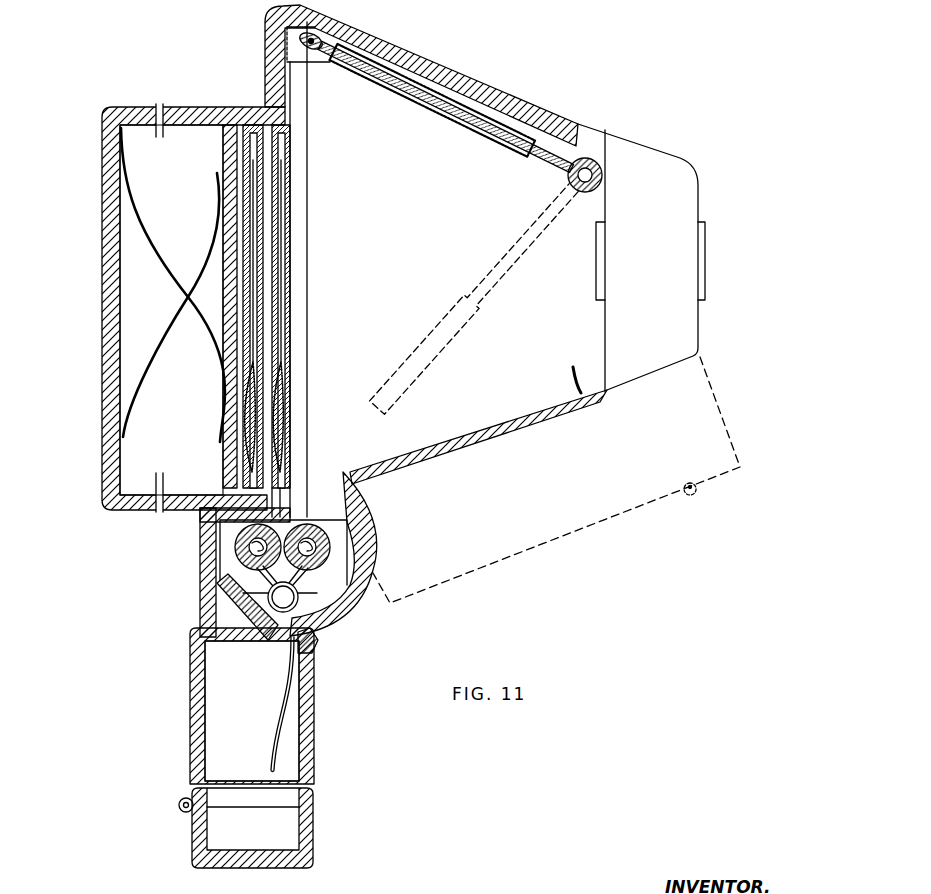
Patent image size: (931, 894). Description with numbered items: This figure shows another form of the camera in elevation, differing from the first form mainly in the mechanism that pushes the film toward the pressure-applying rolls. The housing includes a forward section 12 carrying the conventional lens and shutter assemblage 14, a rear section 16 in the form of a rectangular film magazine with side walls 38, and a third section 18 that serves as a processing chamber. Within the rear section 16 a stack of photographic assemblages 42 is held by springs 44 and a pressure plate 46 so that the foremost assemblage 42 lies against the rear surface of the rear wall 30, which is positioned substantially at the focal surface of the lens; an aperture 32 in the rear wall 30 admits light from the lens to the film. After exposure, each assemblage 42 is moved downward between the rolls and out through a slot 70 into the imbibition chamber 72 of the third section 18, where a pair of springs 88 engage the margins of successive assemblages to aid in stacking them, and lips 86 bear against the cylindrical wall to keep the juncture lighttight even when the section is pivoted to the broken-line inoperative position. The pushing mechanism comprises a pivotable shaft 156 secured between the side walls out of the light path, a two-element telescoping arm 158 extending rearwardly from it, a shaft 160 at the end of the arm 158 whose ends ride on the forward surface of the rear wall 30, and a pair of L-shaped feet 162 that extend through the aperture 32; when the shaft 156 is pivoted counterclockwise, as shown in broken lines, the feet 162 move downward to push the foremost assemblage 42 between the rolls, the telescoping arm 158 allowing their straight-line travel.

The forward section 12 is at (530, 93).
The lens and shutter assemblage 14 is at (658, 146).
The rear section 16 is at (100, 306).
The third section 18 is at (552, 545).
The rear wall 30 is at (308, 450).
The aperture 32 is at (302, 333).
The side walls 38 is at (181, 190).
The photographic assemblages 42 is at (298, 257).
The springs 44 is at (222, 232).
The pressure plate 46 is at (222, 136).
The slot 70 is at (282, 638).
The imbibition chamber 72 is at (242, 737).
The lips 86 is at (320, 640).
The springs 88 is at (270, 753).
The pivotable shaft 156 is at (595, 173).
The telescoping arm 158 is at (467, 133).
The shaft 160 is at (320, 62).
The L-shaped feet 162 is at (291, 90).